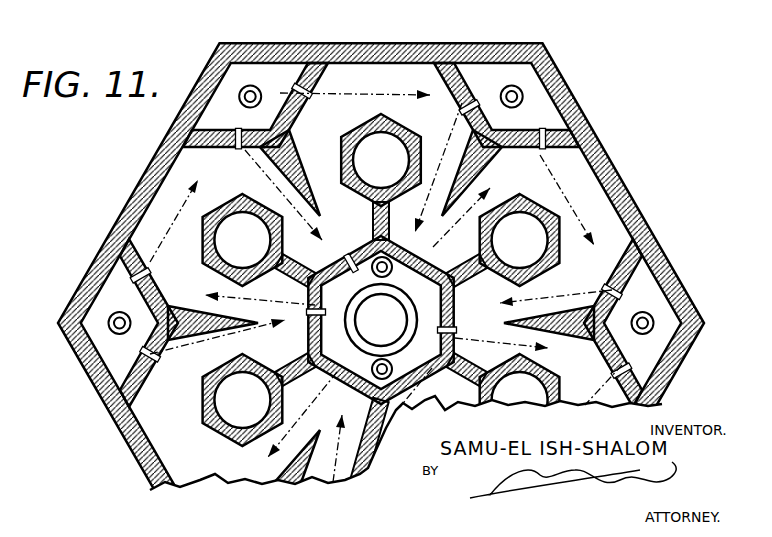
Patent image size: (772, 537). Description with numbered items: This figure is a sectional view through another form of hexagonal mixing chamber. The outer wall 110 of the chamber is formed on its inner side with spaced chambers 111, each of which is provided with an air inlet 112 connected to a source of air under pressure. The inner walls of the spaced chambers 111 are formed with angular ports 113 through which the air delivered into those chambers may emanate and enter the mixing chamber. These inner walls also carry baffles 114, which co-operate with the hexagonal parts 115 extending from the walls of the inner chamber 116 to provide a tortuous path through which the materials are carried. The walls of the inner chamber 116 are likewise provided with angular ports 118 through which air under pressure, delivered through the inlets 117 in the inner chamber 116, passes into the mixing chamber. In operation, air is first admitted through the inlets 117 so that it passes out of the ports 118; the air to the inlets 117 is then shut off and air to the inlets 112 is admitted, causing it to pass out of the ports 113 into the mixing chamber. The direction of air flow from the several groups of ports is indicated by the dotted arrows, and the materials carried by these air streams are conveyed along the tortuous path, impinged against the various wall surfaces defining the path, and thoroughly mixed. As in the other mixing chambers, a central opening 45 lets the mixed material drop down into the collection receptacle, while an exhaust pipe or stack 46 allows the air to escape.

The outer wall 110 is at (608, 168).
The spaced chambers 111 is at (296, 73).
The air inlet 112 is at (256, 94).
The angular ports 113 is at (318, 93).
The baffles 114 is at (302, 153).
The hexagonal parts 115 is at (247, 222).
The inner chamber 116 is at (430, 270).
The inlets 117 is at (373, 272).
The ports 118 is at (351, 258).
The central opening 45 is at (386, 140).
The exhaust pipe or stack 46 is at (387, 300).